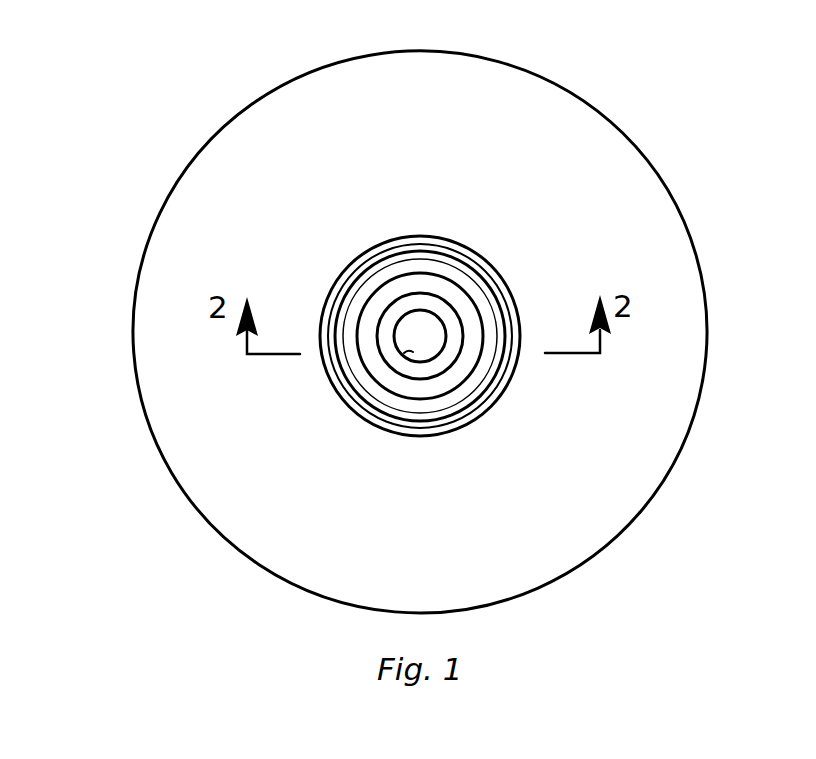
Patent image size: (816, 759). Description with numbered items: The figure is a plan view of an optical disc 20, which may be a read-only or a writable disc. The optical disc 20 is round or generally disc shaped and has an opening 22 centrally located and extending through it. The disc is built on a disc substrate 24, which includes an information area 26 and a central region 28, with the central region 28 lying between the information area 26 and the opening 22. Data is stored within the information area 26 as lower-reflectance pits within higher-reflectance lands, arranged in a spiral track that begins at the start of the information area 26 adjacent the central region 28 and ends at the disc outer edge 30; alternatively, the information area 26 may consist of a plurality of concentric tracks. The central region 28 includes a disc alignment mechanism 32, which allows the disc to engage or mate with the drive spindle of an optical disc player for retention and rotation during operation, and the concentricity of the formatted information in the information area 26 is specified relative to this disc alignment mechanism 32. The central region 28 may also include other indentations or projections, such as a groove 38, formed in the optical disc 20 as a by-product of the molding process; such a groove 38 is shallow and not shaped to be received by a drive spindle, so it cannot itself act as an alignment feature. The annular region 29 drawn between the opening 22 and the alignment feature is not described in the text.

The optical disc 20 is at (158, 118).
The opening 22 is at (404, 353).
The disc substrate 24 is at (556, 218).
The information area 26 is at (228, 435).
The central region 28 is at (468, 425).
The inner annular region 29 is at (450, 350).
The disc outer edge 30 is at (688, 443).
The disc alignment mechanism 32 is at (405, 410).
The groove 38 is at (367, 270).